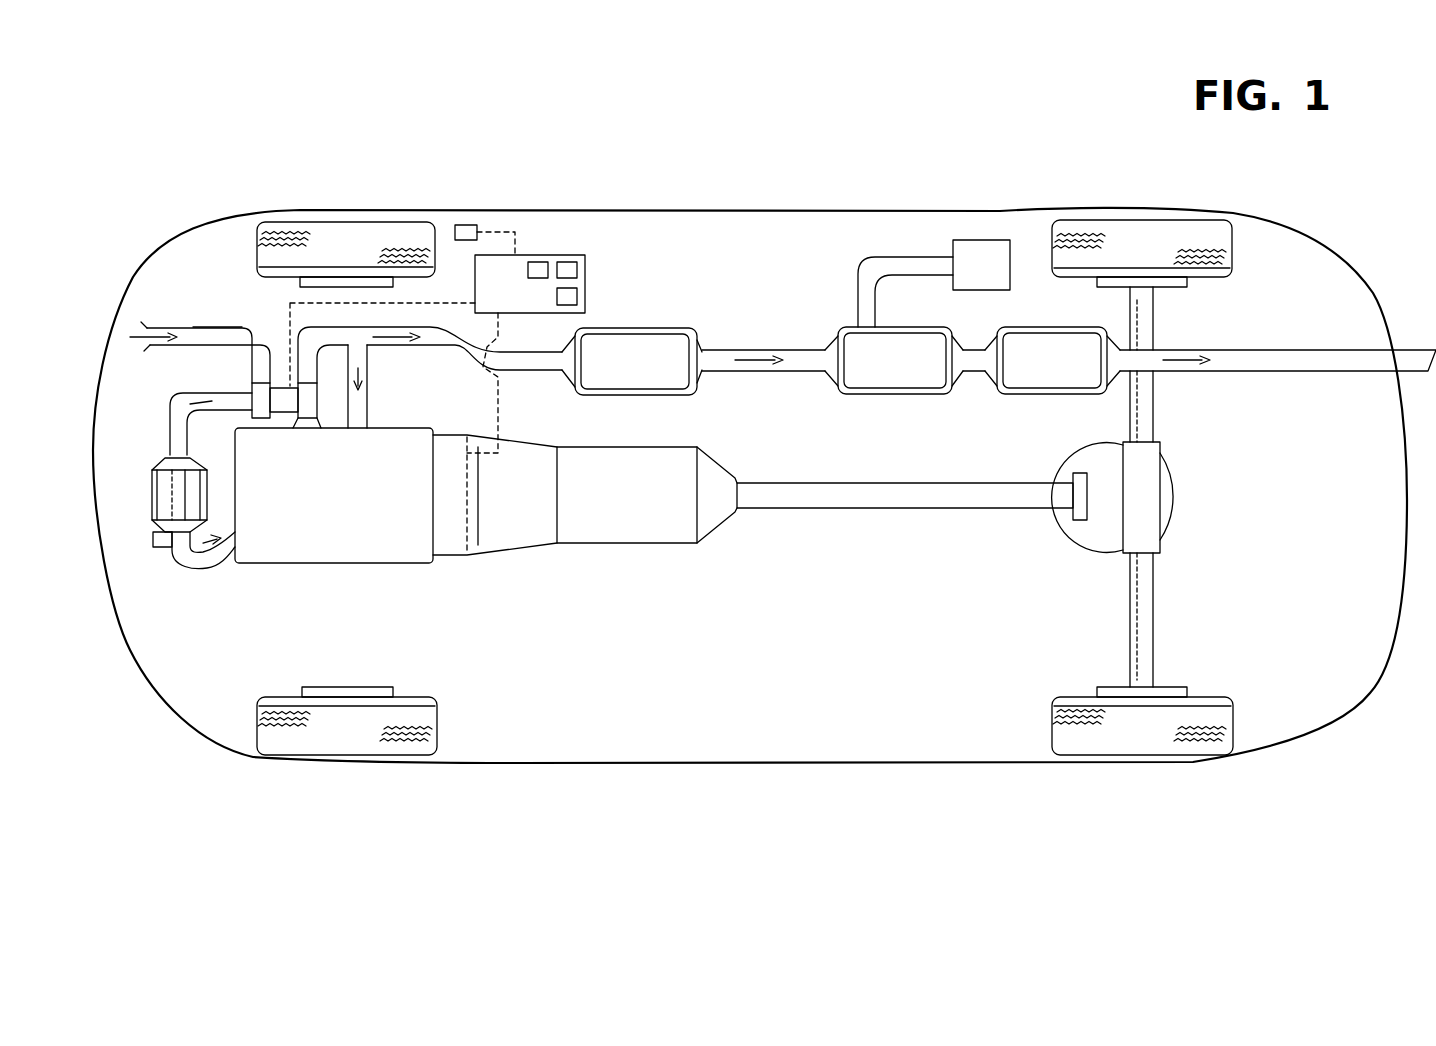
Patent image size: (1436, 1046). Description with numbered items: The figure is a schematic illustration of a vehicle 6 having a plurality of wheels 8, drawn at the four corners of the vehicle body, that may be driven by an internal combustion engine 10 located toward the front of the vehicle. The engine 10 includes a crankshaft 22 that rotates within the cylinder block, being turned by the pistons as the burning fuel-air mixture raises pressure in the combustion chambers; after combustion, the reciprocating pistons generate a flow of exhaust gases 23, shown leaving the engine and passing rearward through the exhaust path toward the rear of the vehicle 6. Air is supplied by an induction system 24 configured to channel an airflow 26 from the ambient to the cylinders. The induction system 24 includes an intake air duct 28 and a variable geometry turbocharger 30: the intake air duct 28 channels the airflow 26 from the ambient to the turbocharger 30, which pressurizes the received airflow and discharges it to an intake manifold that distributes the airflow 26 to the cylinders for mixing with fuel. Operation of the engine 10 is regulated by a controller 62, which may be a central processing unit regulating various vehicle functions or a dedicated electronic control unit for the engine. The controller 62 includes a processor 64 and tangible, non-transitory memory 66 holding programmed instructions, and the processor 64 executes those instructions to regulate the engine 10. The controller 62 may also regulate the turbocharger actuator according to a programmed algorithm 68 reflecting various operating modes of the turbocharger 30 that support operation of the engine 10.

The vehicle 6 is at (767, 818).
The wheels 8 is at (347, 243).
The internal combustion engine 10 is at (315, 511).
The crankshaft 22 is at (183, 412).
The exhaust gases 23 is at (363, 374).
The induction system 24 is at (147, 427).
The airflow 26 is at (148, 330).
The intake air duct 28 is at (192, 327).
The variable geometry turbocharger 30 is at (278, 382).
The controller 62 is at (487, 307).
The processor 64 is at (541, 262).
The memory 66 is at (578, 262).
The programmed algorithm 68 is at (578, 297).